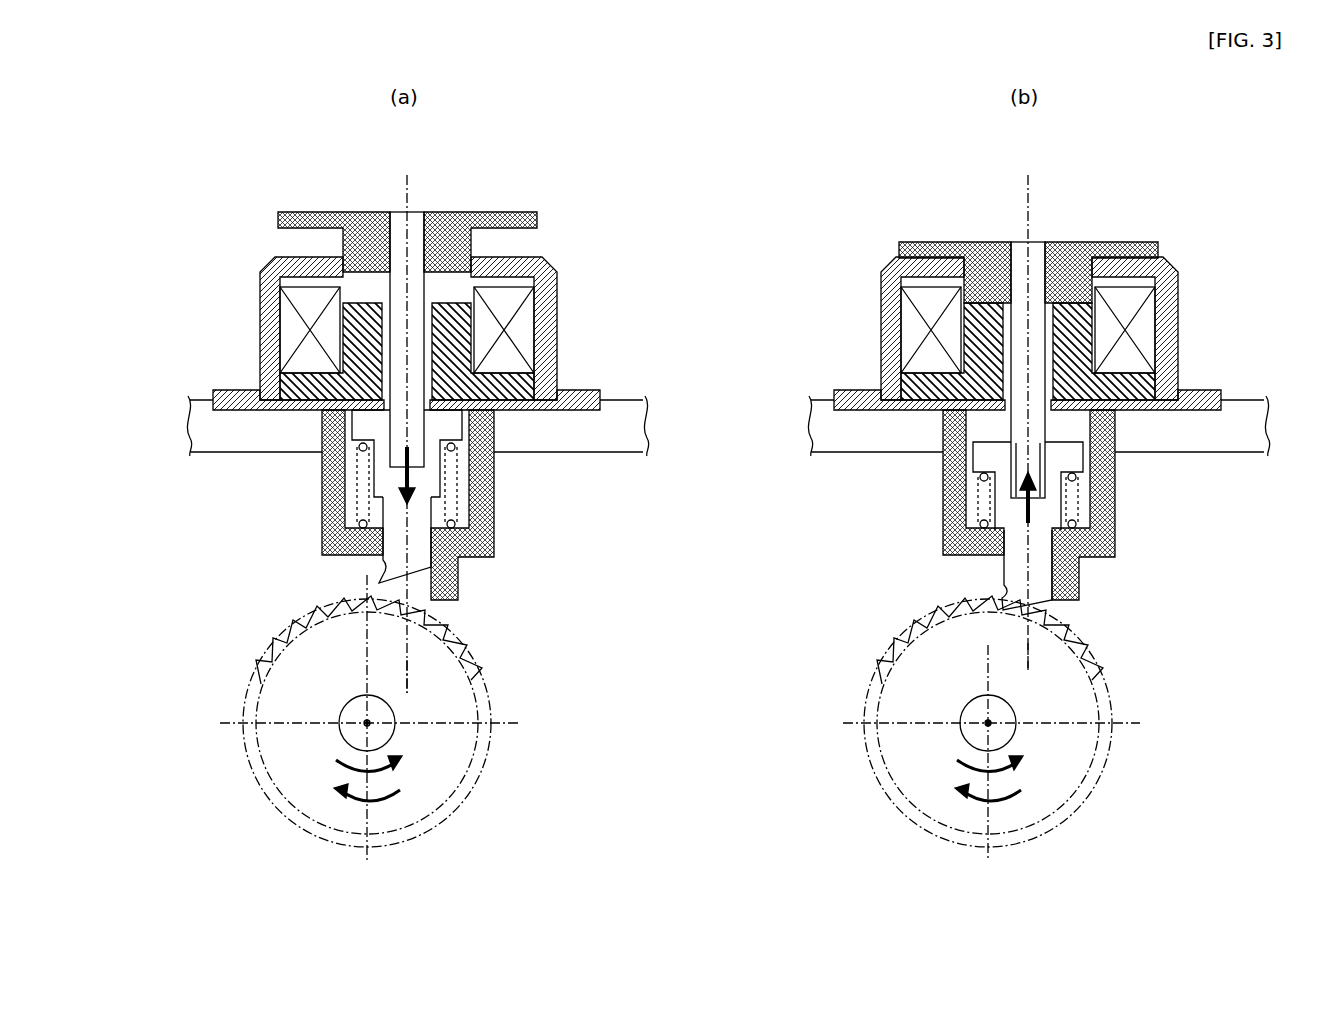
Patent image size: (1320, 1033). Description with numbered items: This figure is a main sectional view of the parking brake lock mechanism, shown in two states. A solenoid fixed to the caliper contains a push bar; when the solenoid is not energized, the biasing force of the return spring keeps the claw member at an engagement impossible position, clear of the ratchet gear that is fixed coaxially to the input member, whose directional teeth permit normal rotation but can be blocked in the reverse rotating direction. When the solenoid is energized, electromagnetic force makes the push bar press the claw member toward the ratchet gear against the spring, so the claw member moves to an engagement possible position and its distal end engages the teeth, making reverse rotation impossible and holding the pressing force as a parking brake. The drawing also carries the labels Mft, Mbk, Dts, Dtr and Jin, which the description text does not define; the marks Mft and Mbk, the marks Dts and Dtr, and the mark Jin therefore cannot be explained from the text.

The flange of push bar Mft is at (360, 508).
The back member of push bar Mbk is at (448, 516).
The stroke distance Dts is at (470, 484).
The travel distance Dtr is at (1046, 504).
The axis of input Jin is at (946, 701).